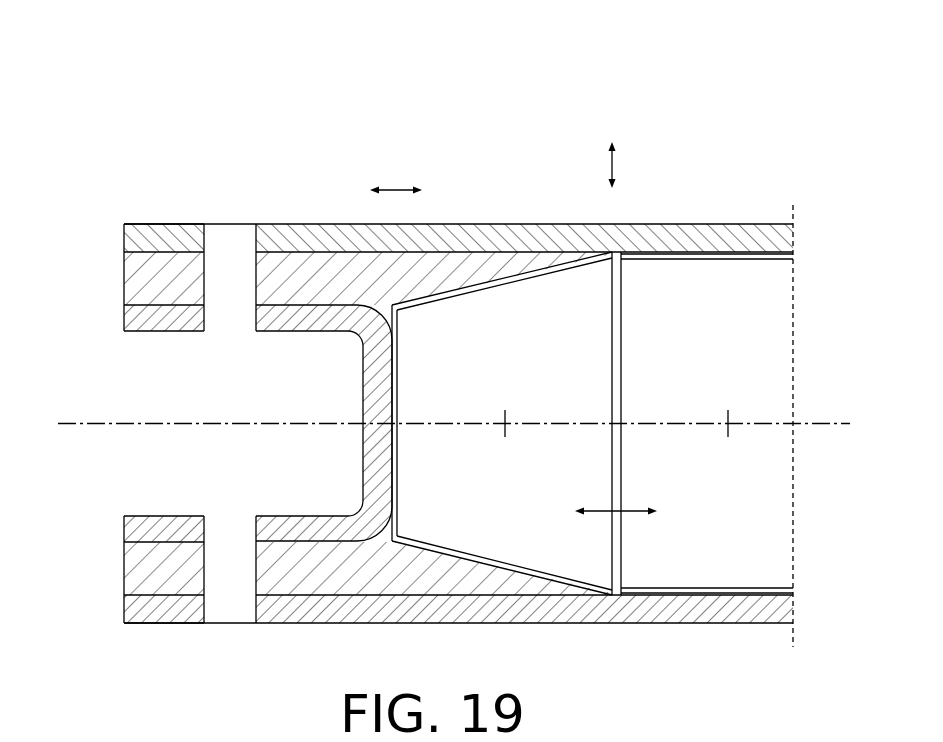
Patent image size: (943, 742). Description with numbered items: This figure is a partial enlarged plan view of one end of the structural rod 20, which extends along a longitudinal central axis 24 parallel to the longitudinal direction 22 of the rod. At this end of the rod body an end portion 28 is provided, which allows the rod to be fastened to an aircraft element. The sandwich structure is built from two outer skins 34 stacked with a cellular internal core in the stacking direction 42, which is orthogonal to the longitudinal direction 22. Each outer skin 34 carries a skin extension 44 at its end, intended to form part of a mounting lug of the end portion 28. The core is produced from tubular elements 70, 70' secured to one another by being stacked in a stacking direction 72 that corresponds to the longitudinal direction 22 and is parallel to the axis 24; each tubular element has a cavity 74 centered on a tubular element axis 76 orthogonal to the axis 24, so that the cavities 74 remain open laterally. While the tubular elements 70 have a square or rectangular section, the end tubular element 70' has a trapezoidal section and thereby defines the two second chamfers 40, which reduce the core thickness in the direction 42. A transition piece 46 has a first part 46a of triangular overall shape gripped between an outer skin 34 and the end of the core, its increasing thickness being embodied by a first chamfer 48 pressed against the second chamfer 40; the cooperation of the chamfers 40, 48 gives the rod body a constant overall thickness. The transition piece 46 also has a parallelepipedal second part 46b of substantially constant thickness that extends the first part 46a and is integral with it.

The structural rod 20 is at (733, 141).
The longitudinal direction 22 is at (396, 190).
The longitudinal central axis 24 is at (97, 423).
The end portion 28 is at (152, 218).
The outer skin 34 is at (740, 223).
The chamfer 40 is at (453, 282).
The stacking direction 42 is at (615, 165).
The skin extension 44 is at (288, 223).
The transition piece 46 is at (102, 280).
The first part of the transition piece 46a is at (510, 265).
The second part of the transition piece 46b is at (123, 267).
The first chamfer 48 is at (430, 300).
The tubular element 70 is at (707, 380).
The end tubular element 70' is at (579, 377).
The stacking direction of the tubular elements 72 is at (635, 508).
The cavity 74 is at (520, 388).
The tubular element axis 76 is at (505, 432).